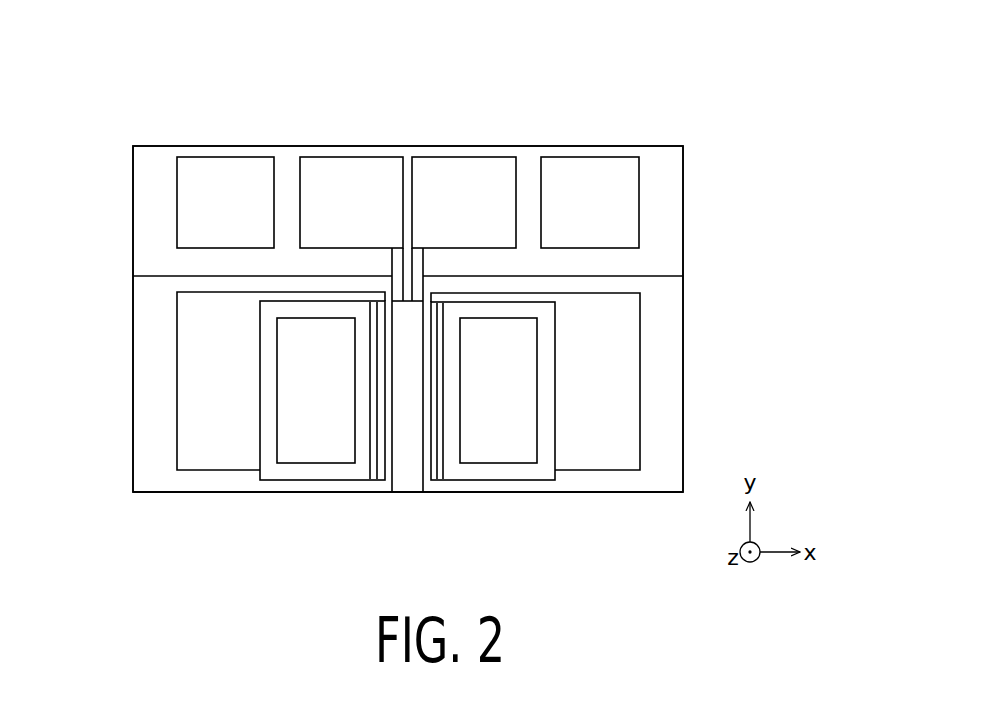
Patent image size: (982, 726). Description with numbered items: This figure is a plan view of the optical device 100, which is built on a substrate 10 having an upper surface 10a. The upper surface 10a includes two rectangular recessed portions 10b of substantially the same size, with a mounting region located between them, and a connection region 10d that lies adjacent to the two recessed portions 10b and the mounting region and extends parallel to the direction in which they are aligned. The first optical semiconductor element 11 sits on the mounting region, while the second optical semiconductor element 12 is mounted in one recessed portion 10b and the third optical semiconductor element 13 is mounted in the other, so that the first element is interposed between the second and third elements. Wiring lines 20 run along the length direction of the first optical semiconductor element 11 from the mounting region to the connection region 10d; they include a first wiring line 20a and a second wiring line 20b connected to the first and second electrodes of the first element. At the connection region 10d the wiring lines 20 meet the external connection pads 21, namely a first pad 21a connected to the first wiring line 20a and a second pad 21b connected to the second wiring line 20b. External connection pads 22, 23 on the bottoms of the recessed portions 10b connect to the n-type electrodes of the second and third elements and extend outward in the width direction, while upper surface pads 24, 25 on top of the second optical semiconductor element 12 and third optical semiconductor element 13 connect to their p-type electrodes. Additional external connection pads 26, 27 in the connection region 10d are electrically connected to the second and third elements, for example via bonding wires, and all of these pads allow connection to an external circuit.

The optical device 100 is at (128, 102).
The substrate 10 is at (658, 228).
The upper surface 10a is at (155, 215).
The recessed portion 10b is at (155, 428).
The connection region 10d is at (528, 175).
The first optical semiconductor element 11 is at (408, 463).
The second optical semiconductor element 12 is at (298, 470).
The third optical semiconductor element 13 is at (492, 470).
The wiring lines 20 is at (342, 161).
The first wiring line 20a is at (415, 260).
The second wiring line 20b is at (398, 268).
The external connection pads 21 is at (408, 135).
The first pad 21a is at (447, 182).
The second pad 21b is at (380, 178).
The external connection pad 22 is at (218, 438).
The external connection pad 23 is at (578, 448).
The upper surface pad 24 is at (327, 447).
The upper surface pad 25 is at (520, 448).
The external connection pad 26 is at (213, 187).
The external connection pad 27 is at (588, 187).